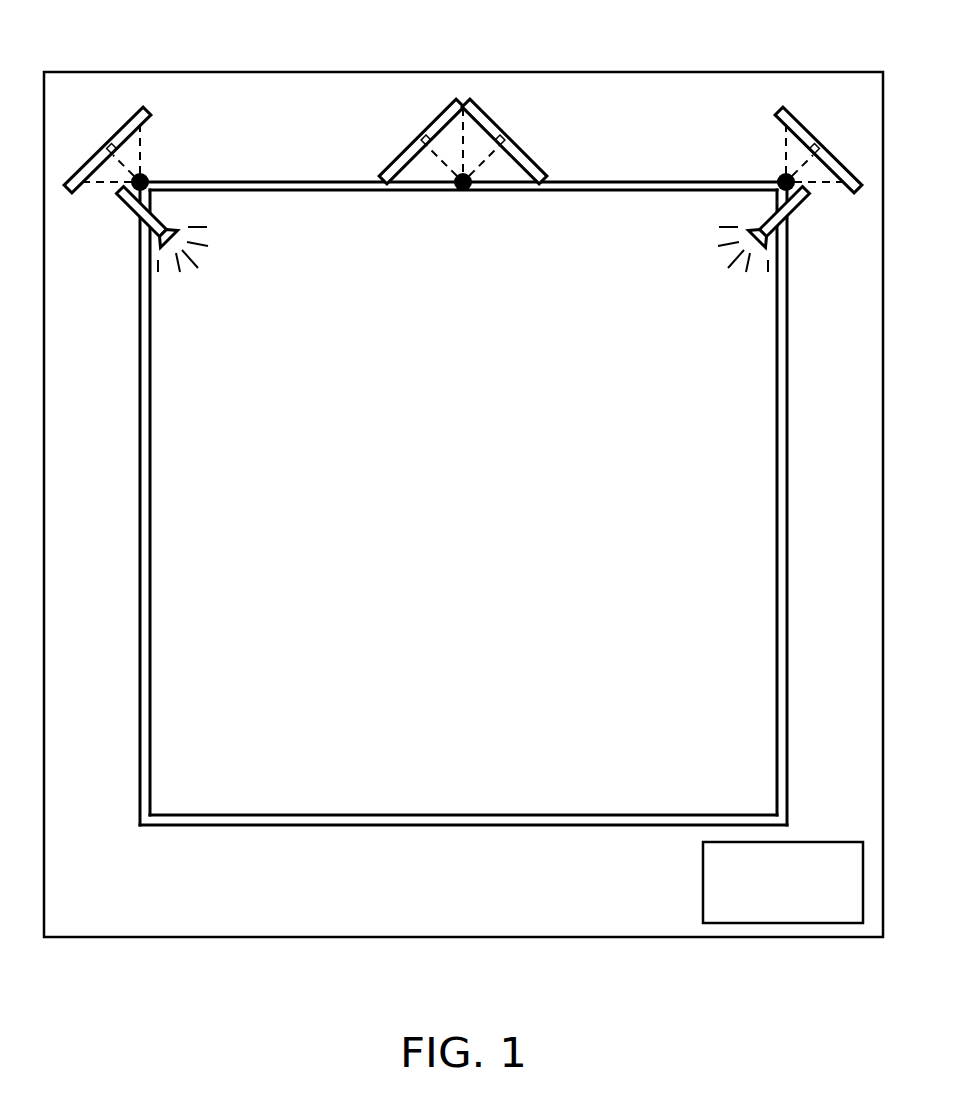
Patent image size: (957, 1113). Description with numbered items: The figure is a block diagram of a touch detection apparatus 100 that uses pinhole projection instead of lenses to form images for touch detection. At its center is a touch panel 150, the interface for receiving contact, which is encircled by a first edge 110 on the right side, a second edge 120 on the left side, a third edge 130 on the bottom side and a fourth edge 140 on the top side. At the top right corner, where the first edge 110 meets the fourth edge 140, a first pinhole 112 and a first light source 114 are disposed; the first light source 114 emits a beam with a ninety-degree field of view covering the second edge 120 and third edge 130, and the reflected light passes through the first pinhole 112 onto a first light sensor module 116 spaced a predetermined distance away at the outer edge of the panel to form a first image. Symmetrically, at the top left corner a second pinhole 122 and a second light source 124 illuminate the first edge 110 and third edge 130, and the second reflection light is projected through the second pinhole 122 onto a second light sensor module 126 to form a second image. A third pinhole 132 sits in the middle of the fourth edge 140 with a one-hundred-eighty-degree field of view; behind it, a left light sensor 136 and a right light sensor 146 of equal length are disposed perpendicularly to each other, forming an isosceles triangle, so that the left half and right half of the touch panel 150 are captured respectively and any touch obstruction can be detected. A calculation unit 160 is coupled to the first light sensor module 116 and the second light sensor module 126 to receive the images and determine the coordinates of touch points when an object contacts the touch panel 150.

The touch detection apparatus 100 is at (718, 33).
The first edge 110 is at (787, 488).
The first pinhole 112 is at (780, 178).
The first light source 114 is at (803, 212).
The first light sensor module 116 is at (822, 142).
The second edge 120 is at (140, 488).
The second pinhole 122 is at (150, 178).
The second light source 124 is at (126, 212).
The second light sensor module 126 is at (105, 142).
The third edge 130 is at (545, 827).
The third pinhole 132 is at (463, 192).
The left light sensor 136 is at (538, 160).
The fourth edge 140 is at (645, 181).
The right light sensor 146 is at (382, 168).
The touch panel 150 is at (488, 520).
The calculation unit 160 is at (703, 884).